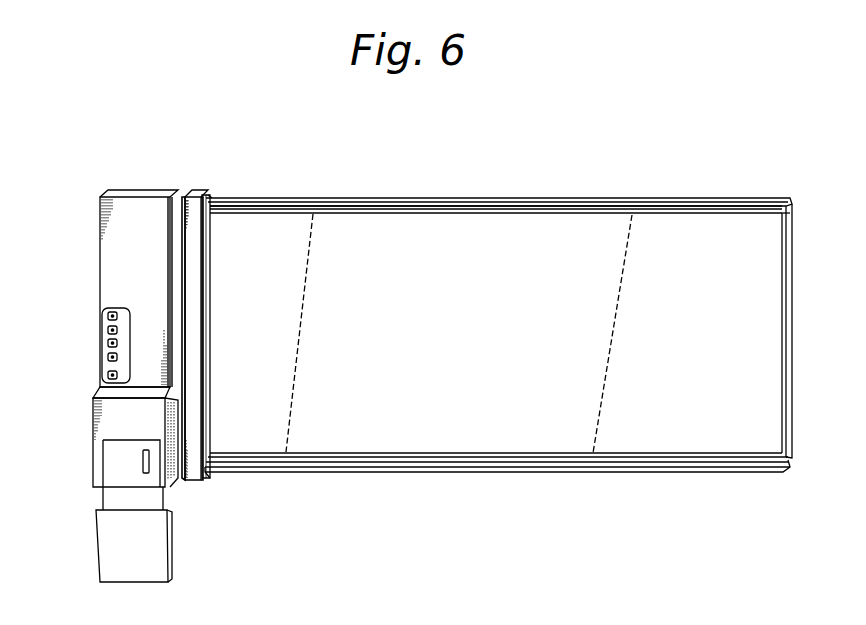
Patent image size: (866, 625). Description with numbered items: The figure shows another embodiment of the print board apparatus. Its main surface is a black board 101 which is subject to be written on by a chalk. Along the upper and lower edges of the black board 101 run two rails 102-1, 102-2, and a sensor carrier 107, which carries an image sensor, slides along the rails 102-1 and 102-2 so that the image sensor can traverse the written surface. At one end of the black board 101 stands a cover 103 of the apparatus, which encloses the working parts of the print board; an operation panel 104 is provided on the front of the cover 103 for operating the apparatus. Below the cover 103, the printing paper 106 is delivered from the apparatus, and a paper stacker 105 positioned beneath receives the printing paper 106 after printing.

The black board 101 is at (780, 258).
The rail 102-1 is at (764, 200).
The rail 102-2 is at (753, 473).
The cover 103 is at (138, 207).
The operation panel 104 is at (104, 371).
The paper stacker 105 is at (109, 548).
The printing paper 106 is at (120, 500).
The sensor carrier 107 is at (203, 193).